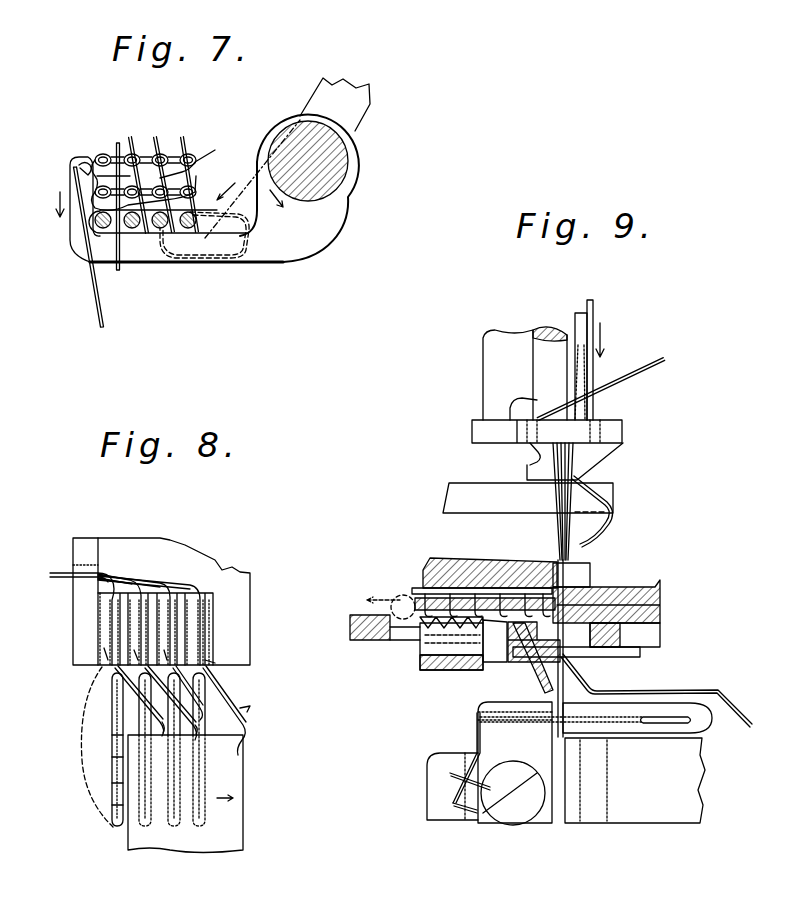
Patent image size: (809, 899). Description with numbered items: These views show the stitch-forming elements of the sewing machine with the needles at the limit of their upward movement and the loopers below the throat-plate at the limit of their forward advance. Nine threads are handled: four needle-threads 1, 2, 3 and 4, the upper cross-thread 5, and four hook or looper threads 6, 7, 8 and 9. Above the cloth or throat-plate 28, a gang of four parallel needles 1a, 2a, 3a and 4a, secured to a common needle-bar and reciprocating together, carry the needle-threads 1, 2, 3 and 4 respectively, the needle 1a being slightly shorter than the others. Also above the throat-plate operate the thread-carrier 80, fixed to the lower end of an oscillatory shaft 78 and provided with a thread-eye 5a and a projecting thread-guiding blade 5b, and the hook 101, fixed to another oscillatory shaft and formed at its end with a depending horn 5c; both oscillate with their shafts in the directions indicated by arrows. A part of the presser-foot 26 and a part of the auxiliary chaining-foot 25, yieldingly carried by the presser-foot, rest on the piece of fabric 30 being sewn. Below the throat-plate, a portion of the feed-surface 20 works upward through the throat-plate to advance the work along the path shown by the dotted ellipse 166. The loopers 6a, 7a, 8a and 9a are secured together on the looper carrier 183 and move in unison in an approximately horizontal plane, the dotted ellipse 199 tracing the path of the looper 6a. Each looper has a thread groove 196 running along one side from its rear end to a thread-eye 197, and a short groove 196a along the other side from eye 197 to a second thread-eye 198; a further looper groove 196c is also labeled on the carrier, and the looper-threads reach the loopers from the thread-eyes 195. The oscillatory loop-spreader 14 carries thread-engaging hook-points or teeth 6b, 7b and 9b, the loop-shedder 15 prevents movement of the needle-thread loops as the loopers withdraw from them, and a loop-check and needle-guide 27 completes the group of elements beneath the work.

In FIG. 7, the needle-thread 1 is at (106, 157).
In FIG. 8, the needle-thread 1 is at (109, 645).
In FIG. 9, the needle-thread 1 is at (595, 310).
In FIG. 7, the needle-thread 2 is at (133, 152).
In FIG. 8, the needle-thread 2 is at (138, 646).
In FIG. 9, the needle-thread 2 is at (555, 526).
In FIG. 7, the needle-thread 3 is at (161, 152).
In FIG. 8, the needle-thread 3 is at (168, 646).
In FIG. 9, the needle-thread 3 is at (562, 540).
In FIG. 7, the needle-thread 4 is at (188, 152).
In FIG. 8, the needle-thread 4 is at (215, 663).
In FIG. 7, the cross-thread 5 is at (197, 163).
In FIG. 9, the cross-thread 5 is at (662, 358).
In FIG. 7, the thread-eye 5a is at (80, 163).
In FIG. 9, the thread-eye 5a is at (527, 450).
In FIG. 7, the thread-guiding blade 5b is at (118, 243).
In FIG. 9, the thread-guiding blade 5b is at (524, 405).
In FIG. 7, the depending horn 5c is at (252, 285).
In FIG. 9, the depending horn 5c is at (594, 531).
In FIG. 7, the needle 1a is at (98, 234).
In FIG. 9, the needle 1a is at (583, 327).
In FIG. 7, the needle 2a is at (133, 236).
In FIG. 9, the needle 2a is at (606, 453).
In FIG. 7, the needle 3a is at (168, 233).
In FIG. 7, the needle 4a is at (198, 233).
In FIG. 8, the looper-thread 6 is at (111, 578).
In FIG. 9, the looper-thread 6 is at (580, 676).
In FIG. 8, the looper-thread 7 is at (137, 580).
In FIG. 9, the looper-thread 7 is at (477, 813).
In FIG. 8, the looper-thread 8 is at (168, 582).
In FIG. 8, the looper-thread 9 is at (197, 585).
In FIG. 8, the looper 6a is at (120, 835).
In FIG. 9, the looper 6a is at (708, 729).
In FIG. 8, the looper 7a is at (143, 828).
In FIG. 8, the looper 8a is at (174, 828).
In FIG. 8, the looper 9a is at (203, 832).
In FIG. 8, the hook-point 6b is at (207, 733).
In FIG. 8, the hook-point 7b is at (237, 725).
In FIG. 8, the hook-point 9b is at (251, 707).
In FIG. 8, the loop-spreader 14 is at (235, 815).
In FIG. 9, the loop-spreader 14 is at (710, 700).
In FIG. 9, the loop-shedder 15 is at (545, 689).
In FIG. 9, the feed-surface 20 is at (430, 643).
In FIG. 9, the chaining-foot 25 is at (475, 567).
In FIG. 9, the presser-foot 26 is at (607, 590).
In FIG. 9, the loop-check and needle-guide 27 is at (665, 810).
In FIG. 9, the throat-plate 28 is at (641, 641).
In FIG. 9, the fabric 30 is at (660, 623).
In FIG. 7, the oscillatory shaft 78 is at (333, 180).
In FIG. 9, the oscillatory shaft 78 is at (487, 375).
In FIG. 7, the thread-carrier 80 is at (293, 250).
In FIG. 9, the thread-carrier 80 is at (480, 427).
In FIG. 7, the hook 101 is at (357, 115).
In FIG. 9, the hook 101 is at (450, 502).
In FIG. 9, the ellipse 166 is at (407, 596).
In FIG. 8, the looper carrier 183 is at (203, 553).
In FIG. 9, the looper carrier 183 is at (545, 820).
In FIG. 9, the thread-eyes 195 is at (446, 790).
In FIG. 8, the thread groove 196 is at (120, 733).
In FIG. 8, the short groove 196a is at (113, 783).
In FIG. 8, the wire channel 196c is at (217, 620).
In FIG. 8, the thread-eye 197 is at (113, 757).
In FIG. 8, the second thread-eye 198 is at (117, 805).
In FIG. 8, the dotted line ellipse 199 is at (92, 688).